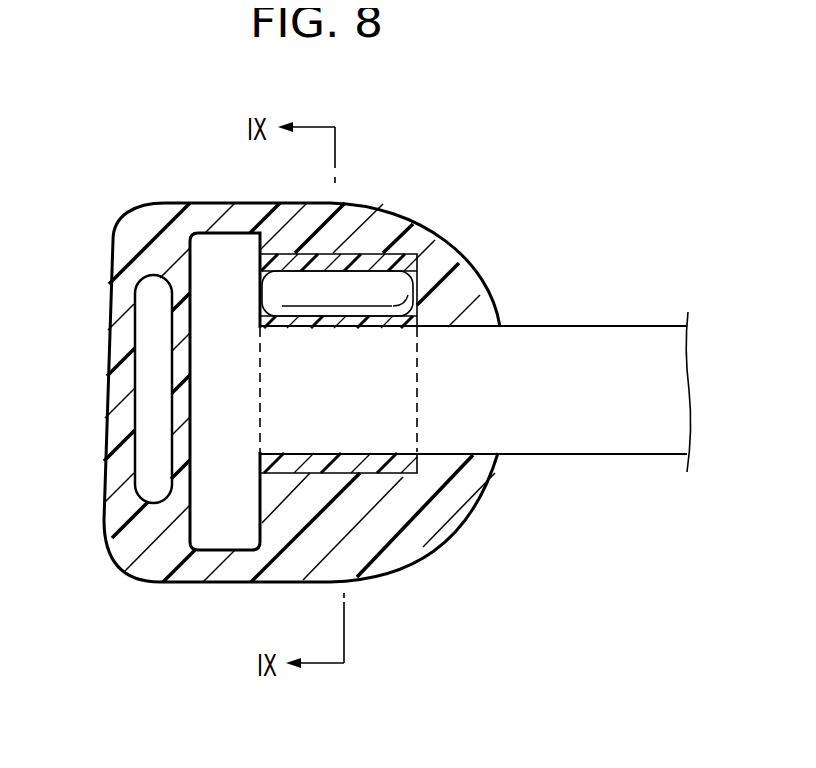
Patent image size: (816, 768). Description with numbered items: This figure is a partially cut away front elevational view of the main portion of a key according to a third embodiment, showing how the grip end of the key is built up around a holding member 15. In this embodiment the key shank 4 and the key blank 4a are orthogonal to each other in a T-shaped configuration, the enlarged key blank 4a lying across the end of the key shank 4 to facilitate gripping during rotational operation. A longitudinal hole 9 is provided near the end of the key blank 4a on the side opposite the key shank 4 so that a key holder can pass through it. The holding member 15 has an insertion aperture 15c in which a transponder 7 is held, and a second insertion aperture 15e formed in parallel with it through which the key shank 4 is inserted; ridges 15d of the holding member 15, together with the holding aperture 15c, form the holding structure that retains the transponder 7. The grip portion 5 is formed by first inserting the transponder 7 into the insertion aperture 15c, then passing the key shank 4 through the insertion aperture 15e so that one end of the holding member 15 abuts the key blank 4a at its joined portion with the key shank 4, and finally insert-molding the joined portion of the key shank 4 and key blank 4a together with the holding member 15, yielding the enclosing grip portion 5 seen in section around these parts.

The key shank 4 is at (603, 443).
The key blank 4a is at (213, 537).
The key grip portion 5 is at (128, 228).
The transponder 7 is at (300, 284).
The longitudinal hole 9 is at (137, 366).
The holding member 15 is at (377, 253).
The insertion aperture 15c is at (410, 313).
The ridges 15d is at (405, 285).
The insertion aperture 15e is at (383, 453).